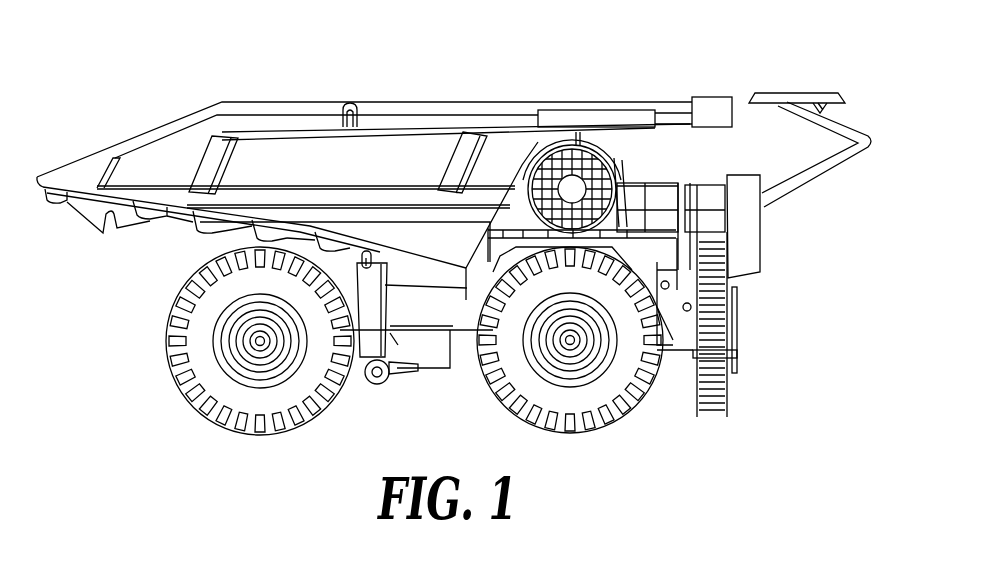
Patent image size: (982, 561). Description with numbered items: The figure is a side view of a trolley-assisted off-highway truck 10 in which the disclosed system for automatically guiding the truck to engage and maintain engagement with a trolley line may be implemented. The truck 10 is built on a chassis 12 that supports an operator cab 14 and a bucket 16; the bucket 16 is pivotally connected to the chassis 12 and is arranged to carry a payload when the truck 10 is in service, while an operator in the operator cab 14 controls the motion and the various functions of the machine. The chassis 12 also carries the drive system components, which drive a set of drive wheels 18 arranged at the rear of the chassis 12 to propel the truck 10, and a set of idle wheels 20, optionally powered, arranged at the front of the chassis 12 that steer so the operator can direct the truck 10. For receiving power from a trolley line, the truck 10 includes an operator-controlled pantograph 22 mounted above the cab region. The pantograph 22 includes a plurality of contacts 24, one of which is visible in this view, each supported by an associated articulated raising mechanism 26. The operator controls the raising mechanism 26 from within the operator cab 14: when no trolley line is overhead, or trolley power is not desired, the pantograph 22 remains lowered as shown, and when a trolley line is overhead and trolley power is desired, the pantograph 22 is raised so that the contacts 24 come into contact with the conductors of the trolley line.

The off-highway truck 10 is at (597, 40).
The chassis 12 is at (449, 313).
The operator cab 14 is at (633, 168).
The bucket 16 is at (281, 104).
The drive wheels 18 is at (181, 389).
The idle wheels 20 is at (637, 408).
The pantograph 22 is at (801, 278).
The contacts 24 is at (779, 93).
The articulated raising mechanism 26 is at (793, 192).